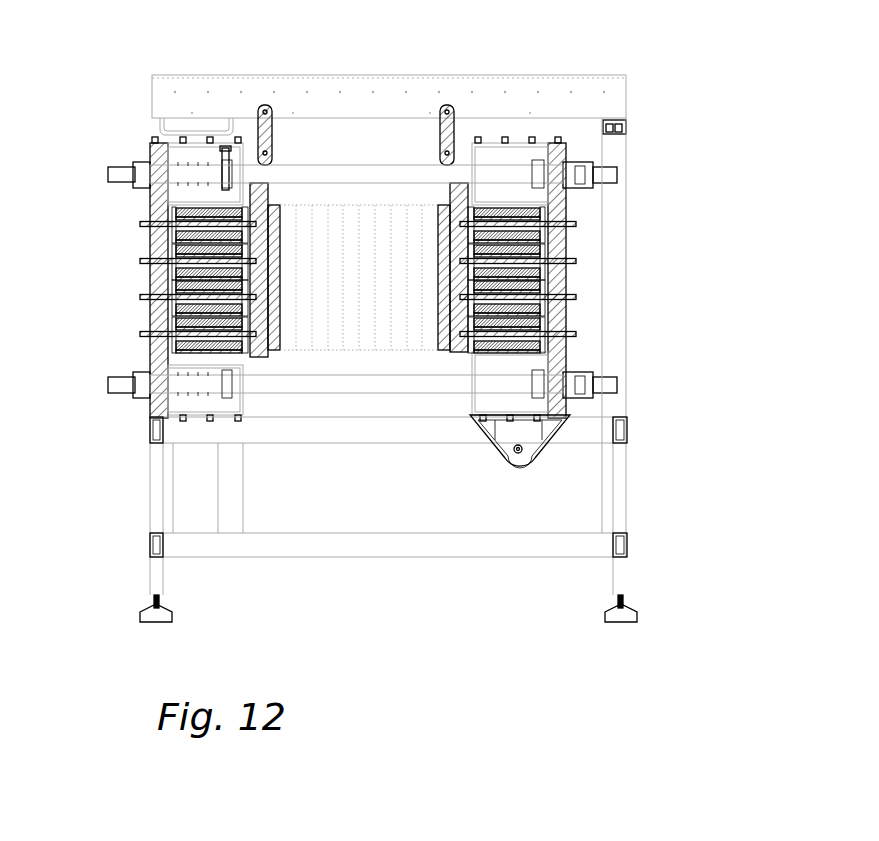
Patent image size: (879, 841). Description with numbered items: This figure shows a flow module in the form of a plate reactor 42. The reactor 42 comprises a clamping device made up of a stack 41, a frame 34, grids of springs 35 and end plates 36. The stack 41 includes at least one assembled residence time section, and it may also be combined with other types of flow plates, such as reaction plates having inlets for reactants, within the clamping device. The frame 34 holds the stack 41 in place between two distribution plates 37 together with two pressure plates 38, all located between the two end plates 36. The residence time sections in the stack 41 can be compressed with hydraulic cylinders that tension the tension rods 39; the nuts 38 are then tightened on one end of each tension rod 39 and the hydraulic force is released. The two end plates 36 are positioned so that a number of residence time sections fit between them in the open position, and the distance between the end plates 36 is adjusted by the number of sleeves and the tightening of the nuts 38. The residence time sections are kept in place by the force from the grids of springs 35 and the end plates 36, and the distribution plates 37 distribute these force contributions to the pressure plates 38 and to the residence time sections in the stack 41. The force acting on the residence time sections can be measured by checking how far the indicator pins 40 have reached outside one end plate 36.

The frame 34 is at (617, 268).
The grids of springs 35 is at (185, 290).
The end plates 36 is at (560, 318).
The distribution plates 37 is at (455, 312).
The pressure plates 38 is at (590, 165).
The tension rod 39 is at (505, 170).
The indicator pins 40 is at (152, 259).
The stack 41 is at (325, 250).
The plate reactor 42 is at (382, 66).